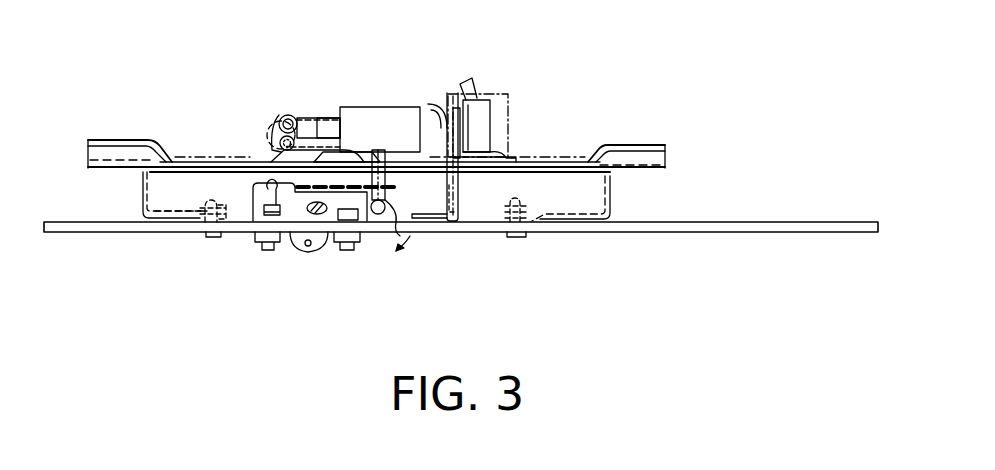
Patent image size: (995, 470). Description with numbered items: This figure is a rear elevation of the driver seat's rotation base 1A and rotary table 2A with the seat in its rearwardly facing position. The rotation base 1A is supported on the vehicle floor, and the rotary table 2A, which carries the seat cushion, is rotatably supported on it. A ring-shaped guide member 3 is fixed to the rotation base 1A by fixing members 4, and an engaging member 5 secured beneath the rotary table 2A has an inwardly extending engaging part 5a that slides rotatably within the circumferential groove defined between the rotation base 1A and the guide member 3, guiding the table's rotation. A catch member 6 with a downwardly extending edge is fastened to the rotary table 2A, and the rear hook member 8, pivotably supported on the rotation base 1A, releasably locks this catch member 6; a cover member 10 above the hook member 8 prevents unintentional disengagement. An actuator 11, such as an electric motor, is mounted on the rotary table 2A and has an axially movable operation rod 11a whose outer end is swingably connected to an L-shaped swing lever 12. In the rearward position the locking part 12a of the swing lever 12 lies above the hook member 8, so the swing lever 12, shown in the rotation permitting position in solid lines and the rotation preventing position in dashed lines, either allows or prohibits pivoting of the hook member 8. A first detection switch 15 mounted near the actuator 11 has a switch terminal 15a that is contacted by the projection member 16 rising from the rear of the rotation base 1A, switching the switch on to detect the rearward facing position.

The rotation base 1A is at (640, 232).
The rotary table 2A is at (630, 145).
The ring-shaped guide member 3 is at (165, 206).
The fixing members 4 is at (210, 225).
The engaging member 5 is at (140, 212).
The engaging part 5a is at (172, 232).
The catch member 6 is at (388, 204).
The hook member 8 is at (385, 232).
The cover member 10 is at (258, 185).
The actuator 11 is at (378, 107).
The operation rod 11a is at (311, 117).
The swing lever 12 is at (274, 128).
The locking part 12a is at (272, 150).
The first detection switch 15 is at (489, 110).
The switch terminal 15a is at (498, 154).
The projection member 16 is at (461, 215).